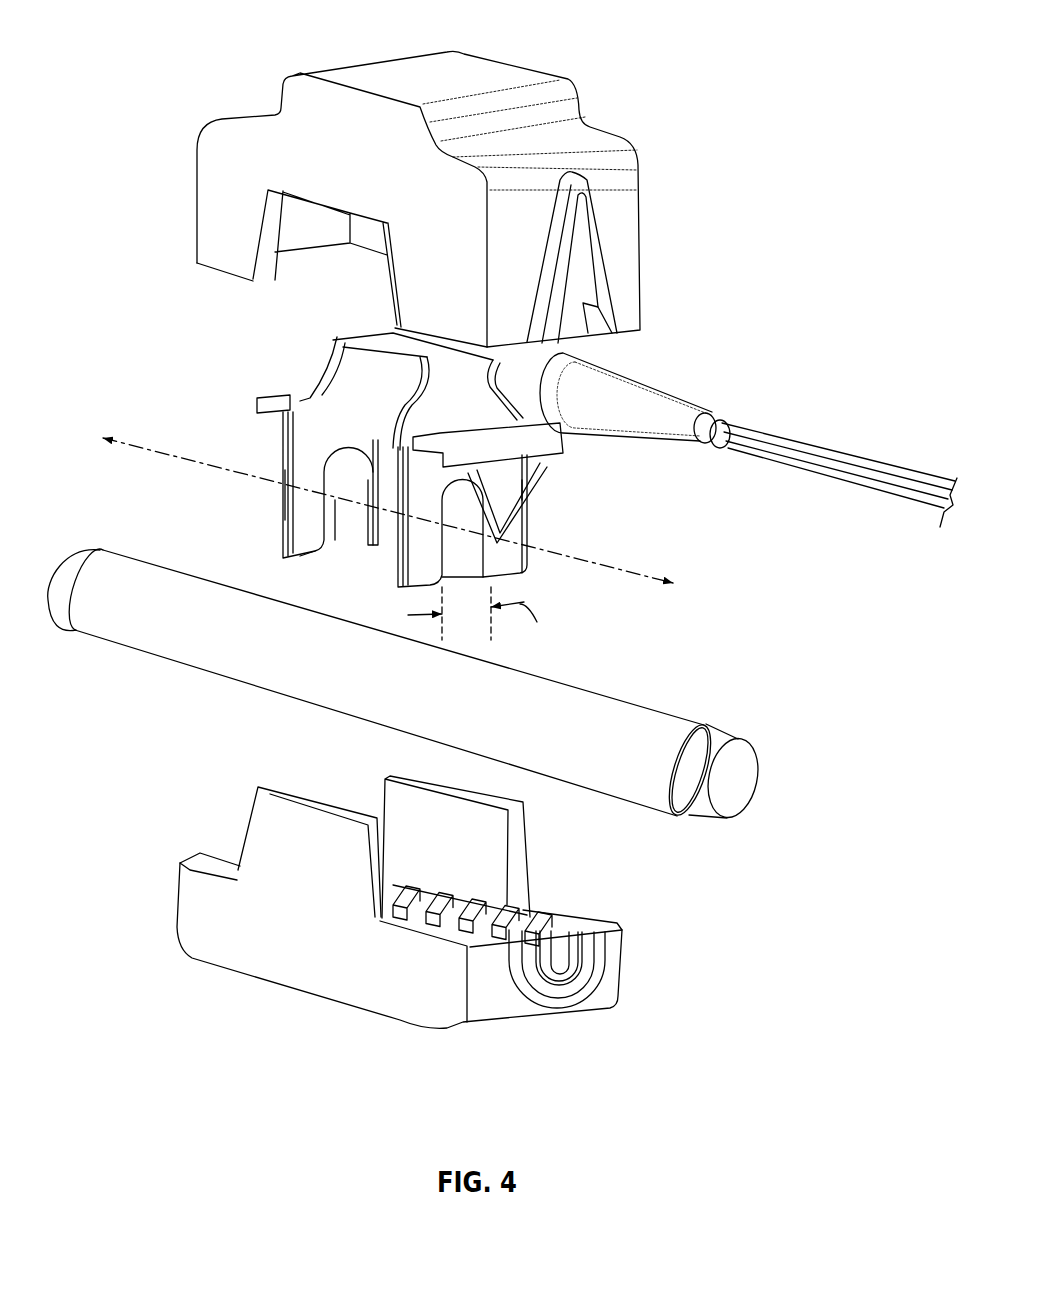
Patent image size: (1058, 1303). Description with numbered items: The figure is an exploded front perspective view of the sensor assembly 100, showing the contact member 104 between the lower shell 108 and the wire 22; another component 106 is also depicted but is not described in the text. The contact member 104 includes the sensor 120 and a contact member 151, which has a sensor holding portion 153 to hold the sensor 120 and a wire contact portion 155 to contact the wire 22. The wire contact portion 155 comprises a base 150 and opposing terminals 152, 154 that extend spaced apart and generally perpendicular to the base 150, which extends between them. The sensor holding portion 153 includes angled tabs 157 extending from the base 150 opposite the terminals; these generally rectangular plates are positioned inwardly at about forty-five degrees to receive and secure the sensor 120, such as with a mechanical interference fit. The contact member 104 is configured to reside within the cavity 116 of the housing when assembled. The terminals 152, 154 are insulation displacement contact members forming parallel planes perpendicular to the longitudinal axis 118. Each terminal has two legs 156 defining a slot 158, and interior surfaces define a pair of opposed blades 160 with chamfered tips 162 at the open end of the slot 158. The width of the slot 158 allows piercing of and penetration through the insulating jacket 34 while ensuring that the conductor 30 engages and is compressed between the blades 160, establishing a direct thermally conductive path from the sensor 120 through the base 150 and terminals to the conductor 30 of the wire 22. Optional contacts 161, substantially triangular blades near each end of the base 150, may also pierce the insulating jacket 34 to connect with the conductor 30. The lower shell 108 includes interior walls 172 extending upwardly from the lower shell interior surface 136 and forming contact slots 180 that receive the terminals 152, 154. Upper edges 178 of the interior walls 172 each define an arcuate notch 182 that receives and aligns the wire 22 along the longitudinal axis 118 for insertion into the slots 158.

The sensor assembly 100 is at (724, 116).
The contact member 104 is at (604, 509).
The upper housing 106 is at (538, 72).
The lower shell 108 is at (352, 1014).
The cavity 116 is at (286, 278).
The longitudinal axis 118 is at (134, 442).
The sensor 120 is at (714, 399).
The wire 22 is at (671, 705).
The conductor 30 is at (741, 762).
The insulating jacket 34 is at (721, 727).
The lower shell interior surface 136 is at (548, 994).
The base 150 is at (566, 442).
The contact member 151 is at (262, 386).
The terminal 152 is at (531, 521).
The sensor holding portion 153 is at (329, 332).
The terminal 154 is at (280, 531).
The wire contact portion 155 is at (278, 506).
The legs 156 is at (524, 516).
The angled tabs 157 is at (557, 353).
The slot 158 is at (344, 480).
The blades 160 is at (479, 546).
The contacts 161 is at (528, 486).
The chamfered tips 162 is at (331, 544).
The interior walls 172 is at (560, 906).
The upper edges 178 is at (538, 916).
The contact slots 180 is at (561, 887).
The arcuate notch 182 is at (403, 930).